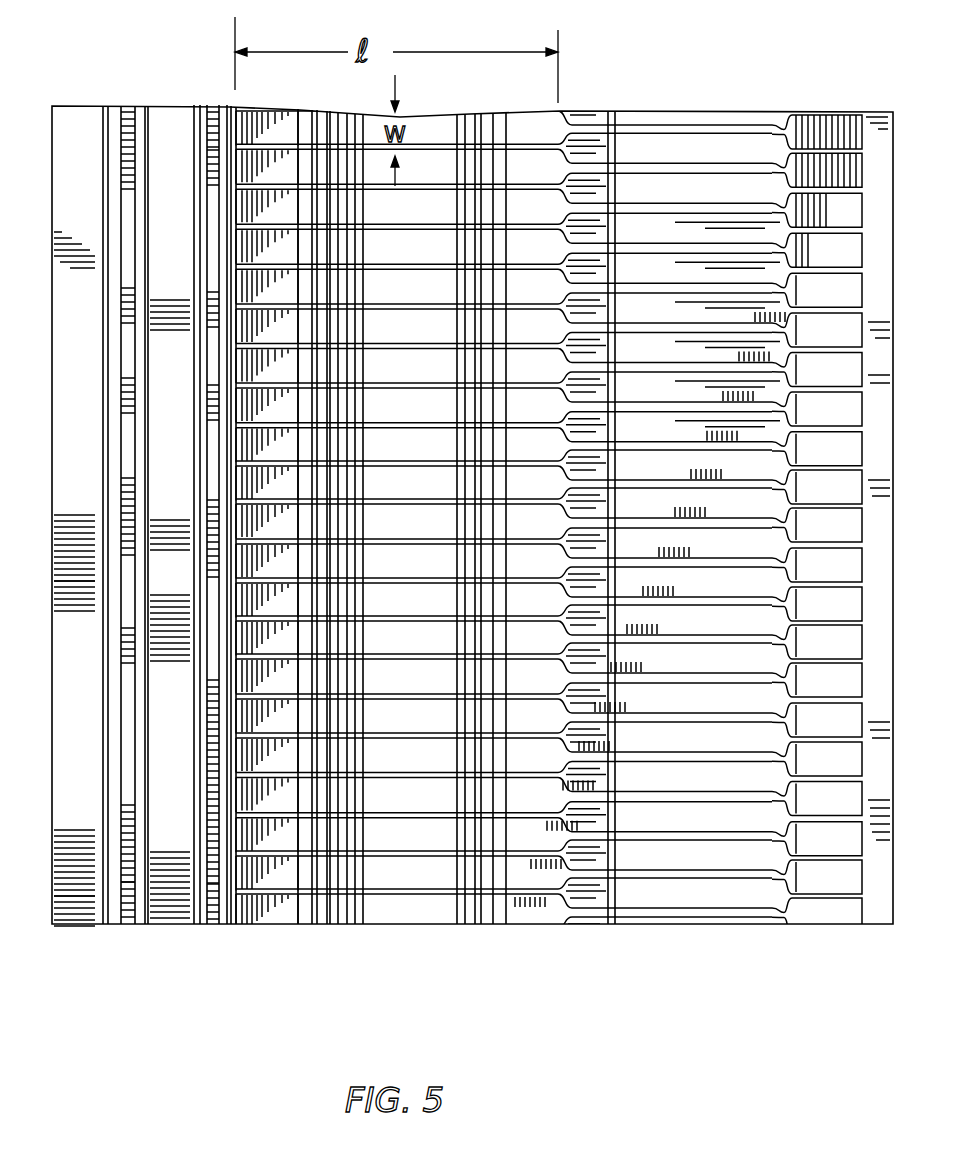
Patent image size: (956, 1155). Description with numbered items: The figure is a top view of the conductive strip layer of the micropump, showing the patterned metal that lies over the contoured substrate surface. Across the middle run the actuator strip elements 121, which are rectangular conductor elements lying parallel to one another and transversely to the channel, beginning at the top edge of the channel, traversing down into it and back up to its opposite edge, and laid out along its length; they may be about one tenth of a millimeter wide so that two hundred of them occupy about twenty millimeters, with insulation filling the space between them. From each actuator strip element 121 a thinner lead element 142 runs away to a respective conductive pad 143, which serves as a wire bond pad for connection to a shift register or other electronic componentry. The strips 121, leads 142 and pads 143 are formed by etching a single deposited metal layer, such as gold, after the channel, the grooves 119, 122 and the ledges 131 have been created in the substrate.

The groove 119 is at (210, 924).
The actuator strip elements 121 is at (437, 218).
The groove 122 is at (125, 108).
The ledges 131 is at (612, 112).
The lead elements 142 is at (692, 208).
The conductive pad 143 is at (822, 206).